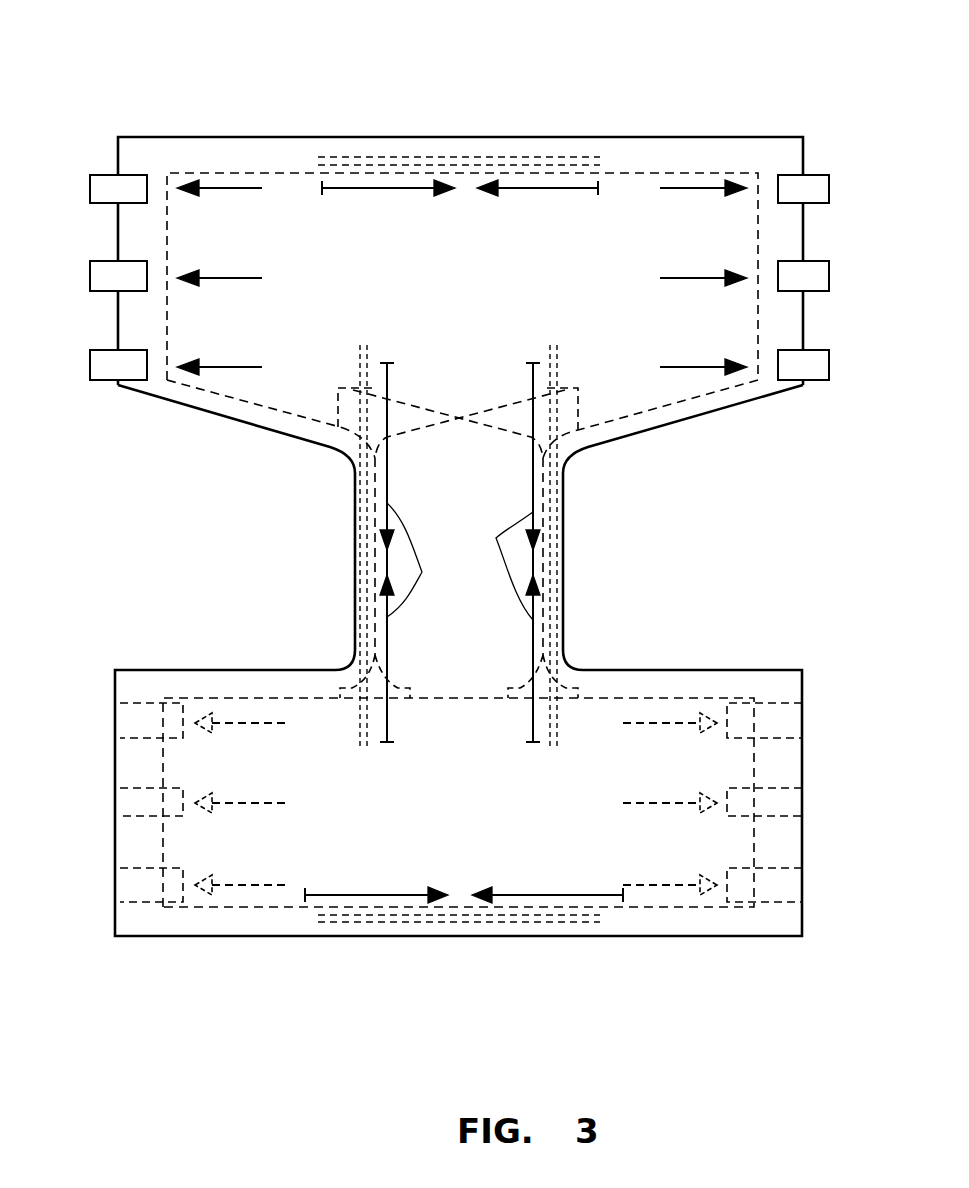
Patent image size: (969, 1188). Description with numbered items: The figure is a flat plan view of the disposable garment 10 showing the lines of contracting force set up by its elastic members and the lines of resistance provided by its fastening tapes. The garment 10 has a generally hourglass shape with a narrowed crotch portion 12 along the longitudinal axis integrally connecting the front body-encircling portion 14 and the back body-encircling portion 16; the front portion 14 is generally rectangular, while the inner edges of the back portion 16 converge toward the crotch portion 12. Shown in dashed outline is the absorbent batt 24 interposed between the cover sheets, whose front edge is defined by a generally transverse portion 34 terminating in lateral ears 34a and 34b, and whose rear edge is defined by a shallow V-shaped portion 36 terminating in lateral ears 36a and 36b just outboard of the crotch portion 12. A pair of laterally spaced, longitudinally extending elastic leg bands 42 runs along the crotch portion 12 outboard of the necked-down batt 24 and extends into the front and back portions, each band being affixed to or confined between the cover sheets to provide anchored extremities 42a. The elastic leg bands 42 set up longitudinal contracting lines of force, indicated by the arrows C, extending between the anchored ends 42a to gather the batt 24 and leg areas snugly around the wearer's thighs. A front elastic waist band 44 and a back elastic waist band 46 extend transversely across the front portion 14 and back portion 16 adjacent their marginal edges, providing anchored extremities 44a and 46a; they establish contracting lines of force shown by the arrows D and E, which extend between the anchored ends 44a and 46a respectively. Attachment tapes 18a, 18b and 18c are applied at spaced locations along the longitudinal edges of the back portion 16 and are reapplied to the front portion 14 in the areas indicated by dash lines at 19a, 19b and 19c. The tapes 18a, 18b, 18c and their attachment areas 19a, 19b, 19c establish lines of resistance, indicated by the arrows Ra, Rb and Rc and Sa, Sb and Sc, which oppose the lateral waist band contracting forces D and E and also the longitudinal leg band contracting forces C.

The disposable garment 10 is at (443, 516).
The crotch portion 12 is at (565, 575).
The front body-encircling portion 14 is at (177, 937).
The back body-encircling portion 16 is at (407, 137).
The attachment tape 18a is at (130, 185).
The attachment tape 18b is at (130, 272).
The attachment tape 18c is at (130, 360).
The attachment area 19a is at (140, 870).
The attachment area 19b is at (140, 790).
The attachment area 19c is at (140, 705).
The absorbent batt 24 is at (540, 862).
The transverse portion 34 is at (447, 700).
The lateral ear 34a is at (350, 677).
The lateral ear 34b is at (583, 670).
The V-shaped portion 36 is at (460, 412).
The lateral ear 36a is at (355, 383).
The lateral ear 36b is at (575, 383).
The elastic leg band 42 is at (355, 497).
The anchored extremity 42a is at (366, 340).
The front elastic waist band 44 is at (380, 925).
The anchored extremity 44a is at (285, 925).
The back elastic waist band 46 is at (495, 158).
The anchored extremity 46a is at (305, 155).
The line of resistance Ra is at (235, 190).
The line of resistance Rb is at (220, 280).
The line of resistance Rc is at (235, 369).
The line of resistance Sa is at (245, 723).
The line of resistance Sb is at (233, 805).
The line of resistance Sc is at (273, 887).
The longitudinal contracting lines of force C is at (460, 561).
The contracting line of force D is at (402, 895).
The contracting line of force E is at (417, 190).